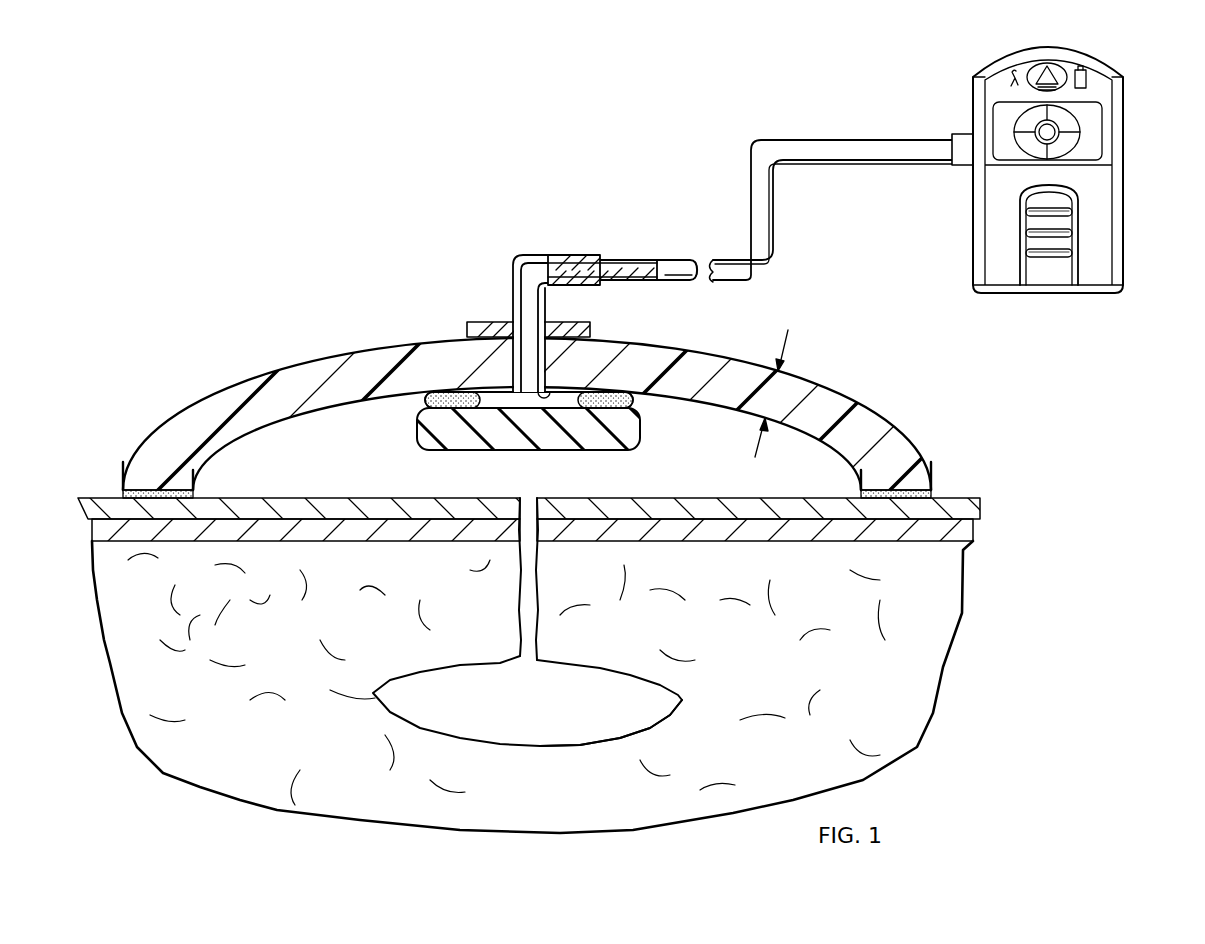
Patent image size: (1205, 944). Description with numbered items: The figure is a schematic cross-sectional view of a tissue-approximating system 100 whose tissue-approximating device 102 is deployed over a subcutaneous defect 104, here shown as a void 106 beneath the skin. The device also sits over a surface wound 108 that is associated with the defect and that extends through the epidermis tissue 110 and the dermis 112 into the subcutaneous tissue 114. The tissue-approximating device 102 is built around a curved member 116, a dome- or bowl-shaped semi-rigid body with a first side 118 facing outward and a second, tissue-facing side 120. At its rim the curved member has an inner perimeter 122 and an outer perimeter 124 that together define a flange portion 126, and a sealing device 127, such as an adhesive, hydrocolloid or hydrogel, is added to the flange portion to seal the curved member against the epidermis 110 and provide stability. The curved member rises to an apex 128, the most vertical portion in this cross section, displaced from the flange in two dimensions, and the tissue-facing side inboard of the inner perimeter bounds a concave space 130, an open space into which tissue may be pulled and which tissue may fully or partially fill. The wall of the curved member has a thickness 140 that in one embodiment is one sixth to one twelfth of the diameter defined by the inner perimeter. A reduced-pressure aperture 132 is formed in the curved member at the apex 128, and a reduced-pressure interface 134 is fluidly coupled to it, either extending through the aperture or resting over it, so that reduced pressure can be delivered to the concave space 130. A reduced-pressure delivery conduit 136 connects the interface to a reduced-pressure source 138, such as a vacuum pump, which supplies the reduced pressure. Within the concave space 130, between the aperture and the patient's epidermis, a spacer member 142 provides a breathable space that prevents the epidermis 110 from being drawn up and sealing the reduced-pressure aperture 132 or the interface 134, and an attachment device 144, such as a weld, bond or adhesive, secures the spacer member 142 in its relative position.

The tissue-approximating system 100 is at (330, 190).
The tissue-approximating device 102 is at (240, 383).
The subcutaneous defect 104 is at (467, 743).
The void 106 is at (585, 746).
The surface wound 108 is at (522, 498).
The epidermis tissue 110 is at (983, 508).
The dermis 112 is at (975, 530).
The subcutaneous tissue 114 is at (580, 591).
The curved member 116 is at (283, 367).
The first side 118 is at (380, 346).
The second, tissue-facing side 120 is at (343, 412).
The inner perimeter 122 is at (196, 493).
The outer perimeter 124 is at (122, 493).
The flange portion 126 is at (187, 490).
The sealing device 127 is at (141, 488).
The apex 128 is at (554, 392).
The concave space 130 is at (374, 481).
The reduced-pressure aperture 132 is at (508, 354).
The reduced-pressure interface 134 is at (562, 255).
The reduced-pressure delivery conduit 136 is at (690, 258).
The reduced-pressure source 138 is at (1122, 71).
The thickness 140 is at (778, 340).
The spacer member 142 is at (607, 451).
The attachment device 144 is at (424, 401).